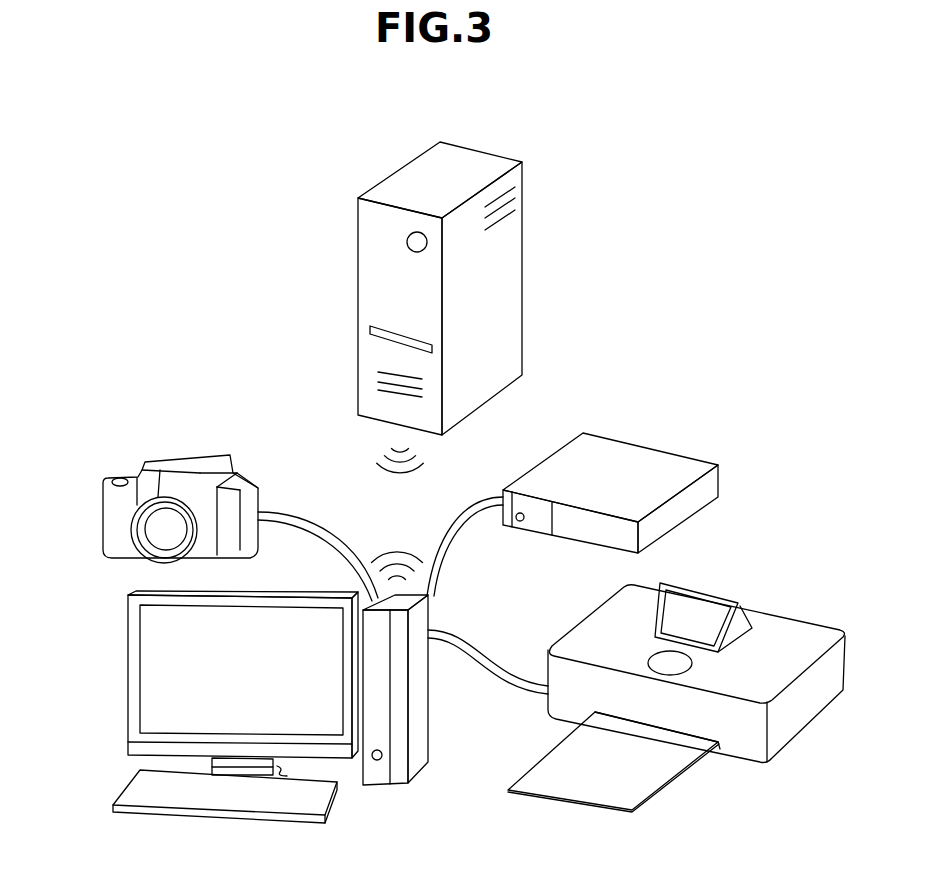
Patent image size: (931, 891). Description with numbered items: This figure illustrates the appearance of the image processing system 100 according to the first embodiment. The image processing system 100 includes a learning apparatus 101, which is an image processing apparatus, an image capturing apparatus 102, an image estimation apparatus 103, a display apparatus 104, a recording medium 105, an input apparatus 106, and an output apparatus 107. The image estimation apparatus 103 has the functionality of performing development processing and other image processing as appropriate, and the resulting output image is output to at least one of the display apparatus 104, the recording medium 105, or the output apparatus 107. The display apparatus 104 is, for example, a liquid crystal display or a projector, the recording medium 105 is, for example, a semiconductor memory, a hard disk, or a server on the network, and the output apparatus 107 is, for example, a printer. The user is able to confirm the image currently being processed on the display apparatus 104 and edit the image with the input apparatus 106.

The image processing system 100 is at (139, 216).
The learning apparatus 101 is at (358, 272).
The image capturing apparatus 102 is at (102, 510).
The image estimation apparatus 103 is at (393, 787).
The display apparatus 104 is at (128, 668).
The recording medium 105 is at (720, 478).
The input apparatus 106 is at (228, 822).
The output apparatus 107 is at (788, 613).